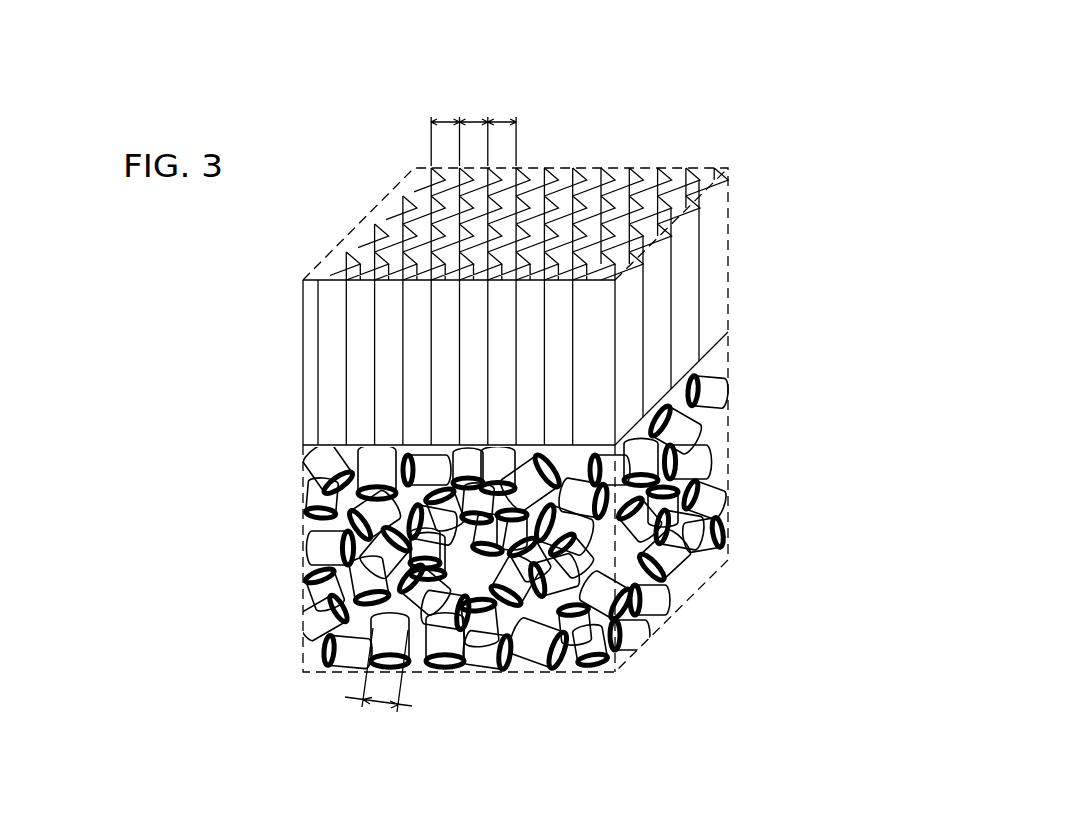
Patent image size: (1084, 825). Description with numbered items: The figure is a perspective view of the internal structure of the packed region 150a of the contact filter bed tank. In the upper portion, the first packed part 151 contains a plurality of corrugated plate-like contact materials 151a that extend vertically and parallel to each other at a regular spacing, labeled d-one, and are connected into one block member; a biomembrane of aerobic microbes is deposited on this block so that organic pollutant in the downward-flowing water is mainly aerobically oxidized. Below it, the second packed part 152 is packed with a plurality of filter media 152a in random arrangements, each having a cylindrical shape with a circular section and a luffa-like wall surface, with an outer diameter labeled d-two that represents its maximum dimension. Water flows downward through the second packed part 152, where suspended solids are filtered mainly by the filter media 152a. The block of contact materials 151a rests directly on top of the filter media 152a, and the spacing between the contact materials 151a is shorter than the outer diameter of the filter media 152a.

The packed region 150a is at (661, 110).
The first packed part 151 is at (729, 271).
The corrugated plate-like contact materials 151a is at (685, 318).
The second packed part 152 is at (729, 491).
The filter media 152a is at (713, 402).